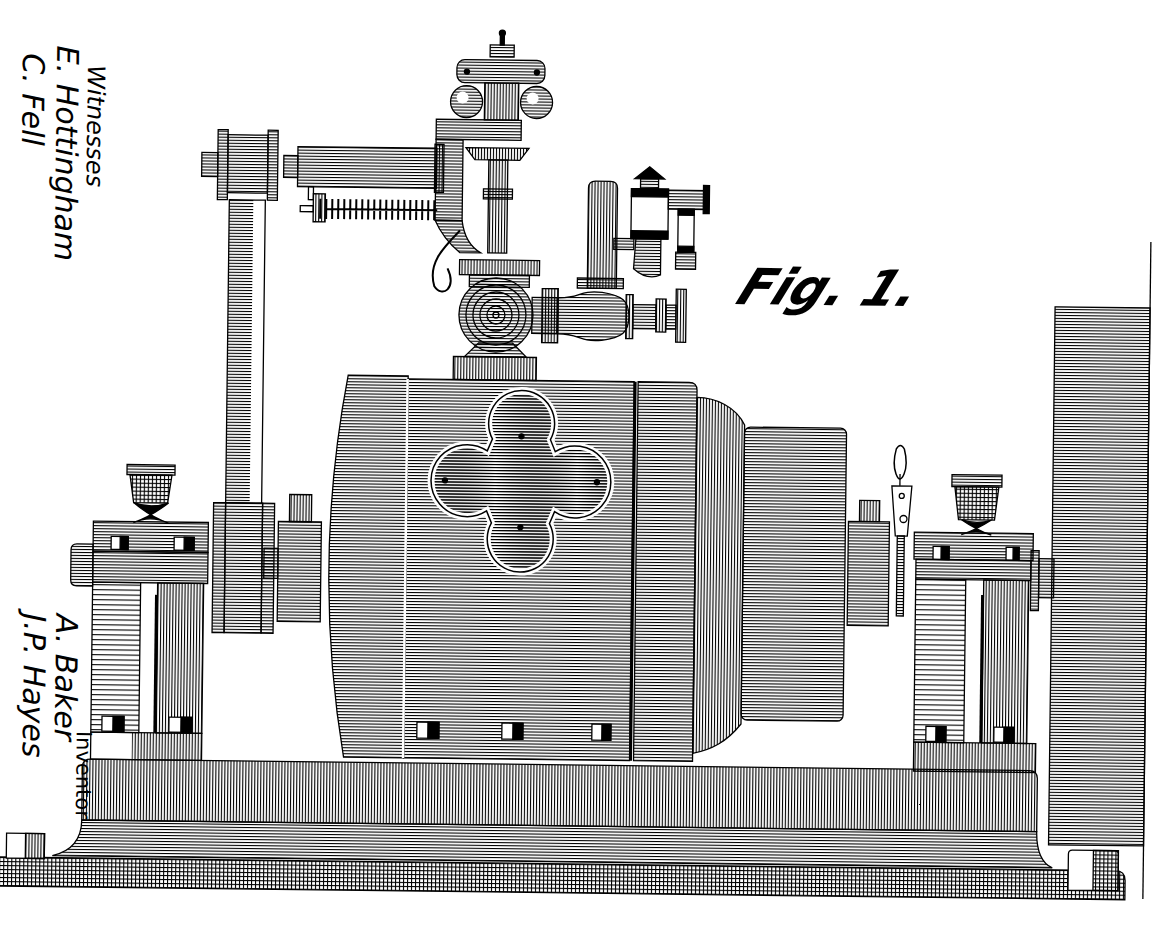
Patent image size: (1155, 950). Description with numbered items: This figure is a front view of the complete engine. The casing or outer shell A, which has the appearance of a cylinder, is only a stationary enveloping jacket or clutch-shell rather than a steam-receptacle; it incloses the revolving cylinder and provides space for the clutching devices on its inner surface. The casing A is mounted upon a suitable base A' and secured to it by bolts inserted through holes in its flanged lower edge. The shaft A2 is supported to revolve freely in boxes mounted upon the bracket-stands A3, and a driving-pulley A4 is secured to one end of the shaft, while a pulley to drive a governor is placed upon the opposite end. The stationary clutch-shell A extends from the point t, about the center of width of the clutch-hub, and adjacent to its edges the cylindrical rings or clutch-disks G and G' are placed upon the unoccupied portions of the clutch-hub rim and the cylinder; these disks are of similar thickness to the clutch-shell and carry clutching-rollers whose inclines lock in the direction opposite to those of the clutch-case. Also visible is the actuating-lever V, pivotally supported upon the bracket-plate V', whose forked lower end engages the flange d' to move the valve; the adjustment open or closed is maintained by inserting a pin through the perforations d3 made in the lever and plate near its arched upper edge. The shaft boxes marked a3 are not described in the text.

The casing or outer shell A is at (518, 558).
The base A' is at (563, 816).
The shaft A2 is at (72, 572).
The bracket-stands A3 is at (206, 689).
The driving-pulley A4 is at (1085, 569).
The shaft bearing box a3 is at (306, 624).
The clutch-disk G is at (741, 562).
The clutch-disk G' is at (368, 556).
The edge of the stationary clutch-shell t is at (637, 562).
The actuating-lever V is at (903, 457).
The bracket-plate V' is at (916, 511).
The flange d' is at (899, 589).
The perforations d3 is at (906, 490).